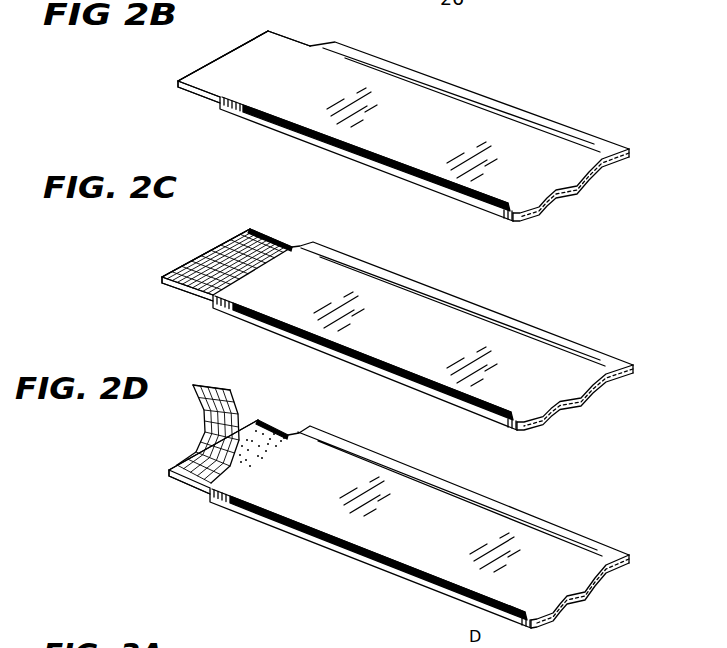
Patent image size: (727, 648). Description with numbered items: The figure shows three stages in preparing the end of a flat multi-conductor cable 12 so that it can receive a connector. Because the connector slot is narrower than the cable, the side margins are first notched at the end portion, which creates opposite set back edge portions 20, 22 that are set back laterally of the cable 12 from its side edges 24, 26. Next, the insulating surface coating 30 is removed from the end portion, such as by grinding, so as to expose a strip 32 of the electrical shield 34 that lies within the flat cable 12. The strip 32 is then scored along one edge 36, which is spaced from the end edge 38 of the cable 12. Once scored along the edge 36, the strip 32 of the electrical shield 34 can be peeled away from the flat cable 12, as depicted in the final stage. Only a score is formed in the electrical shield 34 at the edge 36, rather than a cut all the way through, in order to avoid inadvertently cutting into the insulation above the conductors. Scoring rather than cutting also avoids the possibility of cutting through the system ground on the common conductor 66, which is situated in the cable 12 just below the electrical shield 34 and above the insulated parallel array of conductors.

In FIG. 2B, the flat cable 12 is at (435, 145).
In FIG. 2C, the flat cable 12 is at (431, 350).
In FIG. 2D, the flat cable 12 is at (437, 547).
In FIG. 2B, the set back edge portion 20 is at (288, 38).
In FIG. 2B, the set back edge portion 22 is at (203, 96).
In FIG. 2B, the side edge 24 is at (470, 91).
In FIG. 2B, the side edge 26 is at (428, 181).
In FIG. 2B, the insulating surface coating 30 is at (197, 71).
In FIG. 2C, the strip 32 is at (189, 287).
In FIG. 2D, the strip 32 is at (213, 381).
In FIG. 2C, the electrical shield 34 is at (220, 245).
In FIG. 2D, the electrical shield 34 is at (195, 484).
In FIG. 2C, the edge 36 is at (277, 248).
In FIG. 2D, the edge 36 is at (238, 411).
In FIG. 2B, the end edge 38 is at (217, 63).
In FIG. 2C, the end edge 38 is at (182, 268).
In FIG. 2D, the end edge 38 is at (176, 464).
In FIG. 2C, the common conductor 66 is at (265, 241).
In FIG. 2D, the common conductor 66 is at (273, 423).